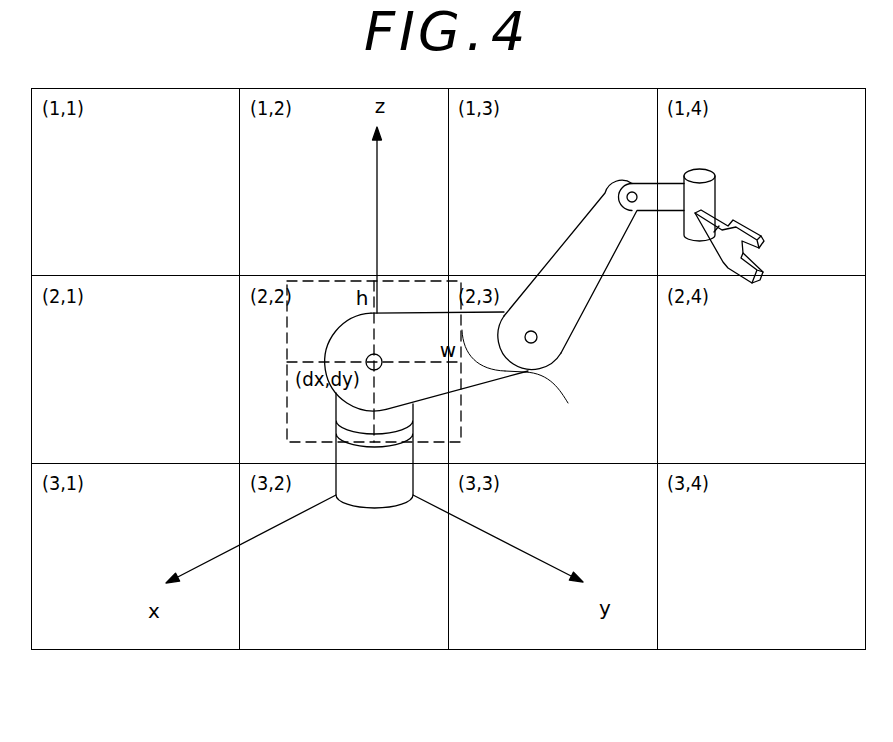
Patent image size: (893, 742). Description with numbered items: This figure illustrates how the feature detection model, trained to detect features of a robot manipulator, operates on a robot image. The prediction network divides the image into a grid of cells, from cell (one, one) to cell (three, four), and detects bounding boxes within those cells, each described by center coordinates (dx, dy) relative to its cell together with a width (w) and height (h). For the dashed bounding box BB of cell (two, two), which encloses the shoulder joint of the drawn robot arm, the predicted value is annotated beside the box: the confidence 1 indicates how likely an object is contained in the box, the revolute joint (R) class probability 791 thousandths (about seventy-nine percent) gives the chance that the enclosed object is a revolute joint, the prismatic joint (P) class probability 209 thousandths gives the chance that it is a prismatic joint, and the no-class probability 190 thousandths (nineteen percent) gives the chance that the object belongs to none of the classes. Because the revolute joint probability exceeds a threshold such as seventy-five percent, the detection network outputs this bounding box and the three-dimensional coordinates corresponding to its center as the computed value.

The confidence 1 is at (462, 328).
The revolute joint class probability 791 is at (539, 396).
The prismatic joint class probability 209 is at (556, 429).
The no-class probability 190 is at (571, 442).